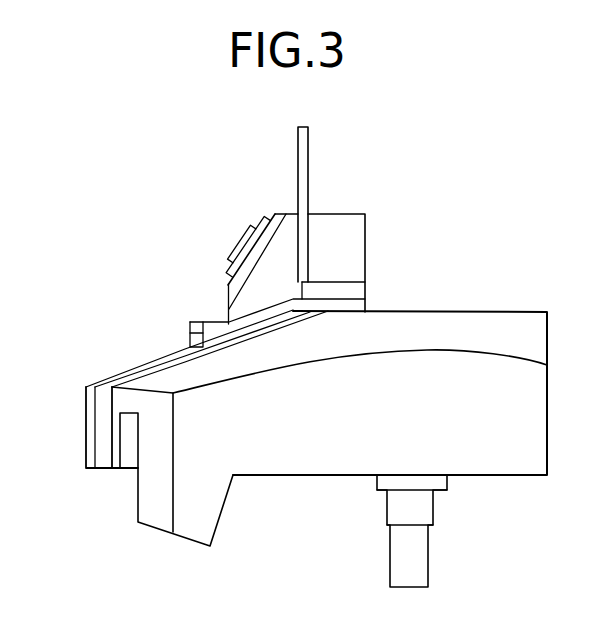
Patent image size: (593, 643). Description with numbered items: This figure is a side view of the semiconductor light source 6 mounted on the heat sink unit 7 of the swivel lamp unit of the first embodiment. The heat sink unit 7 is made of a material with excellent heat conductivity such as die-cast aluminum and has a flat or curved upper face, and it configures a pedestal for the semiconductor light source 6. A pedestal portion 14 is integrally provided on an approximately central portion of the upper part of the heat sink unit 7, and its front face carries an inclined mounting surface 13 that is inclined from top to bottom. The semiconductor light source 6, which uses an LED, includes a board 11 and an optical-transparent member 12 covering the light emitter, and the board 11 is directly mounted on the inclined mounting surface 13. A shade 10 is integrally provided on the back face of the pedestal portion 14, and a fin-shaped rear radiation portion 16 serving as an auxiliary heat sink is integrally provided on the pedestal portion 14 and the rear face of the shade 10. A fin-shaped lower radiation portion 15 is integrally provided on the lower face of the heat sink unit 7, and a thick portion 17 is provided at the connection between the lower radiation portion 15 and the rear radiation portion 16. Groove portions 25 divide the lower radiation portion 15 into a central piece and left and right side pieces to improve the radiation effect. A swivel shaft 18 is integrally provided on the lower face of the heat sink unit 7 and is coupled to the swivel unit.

The semiconductor light source 6 is at (236, 213).
The heat sink unit 7 is at (507, 299).
The shade 10 is at (308, 145).
The board 11 is at (228, 266).
The optical-transparent member 12 is at (240, 239).
The inclined mounting surface 13 is at (274, 211).
The pedestal portion 14 is at (284, 261).
The lower radiation portion 15 is at (155, 497).
The rear radiation portion 16 is at (347, 247).
The thick portion 17 is at (191, 320).
The swivel shaft 18 is at (428, 557).
The groove portions 25 is at (100, 409).